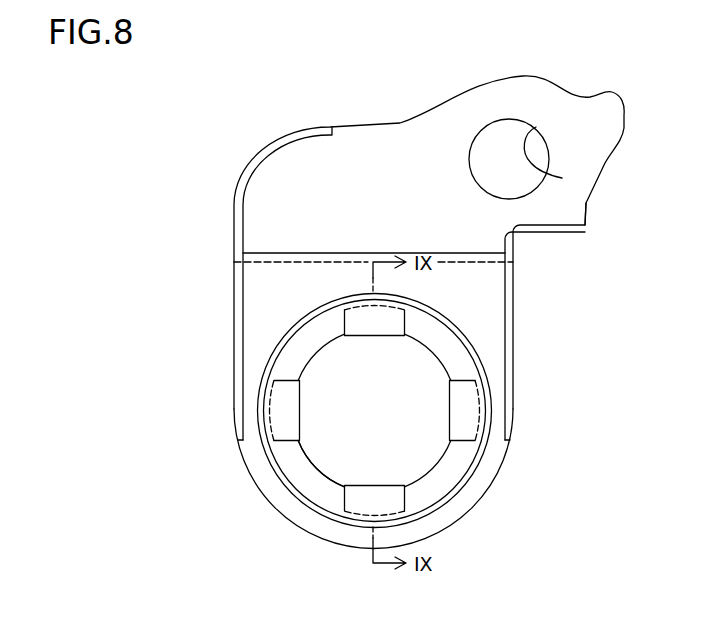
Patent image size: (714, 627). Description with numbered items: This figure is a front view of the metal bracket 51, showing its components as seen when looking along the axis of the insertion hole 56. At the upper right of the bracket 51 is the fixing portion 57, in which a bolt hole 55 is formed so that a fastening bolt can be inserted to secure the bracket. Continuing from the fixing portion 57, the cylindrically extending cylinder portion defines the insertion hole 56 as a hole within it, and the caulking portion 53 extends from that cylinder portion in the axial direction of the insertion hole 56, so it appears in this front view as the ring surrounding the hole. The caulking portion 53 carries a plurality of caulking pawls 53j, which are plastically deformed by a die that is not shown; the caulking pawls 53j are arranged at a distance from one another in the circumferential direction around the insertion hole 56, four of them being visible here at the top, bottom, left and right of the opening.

The bracket 51 is at (229, 149).
The caulking portion 53 is at (488, 397).
The caulking pawls 53j is at (373, 321).
The bolt hole 55 is at (562, 178).
The insertion hole 56 is at (299, 446).
The fixing portion 57 is at (563, 205).